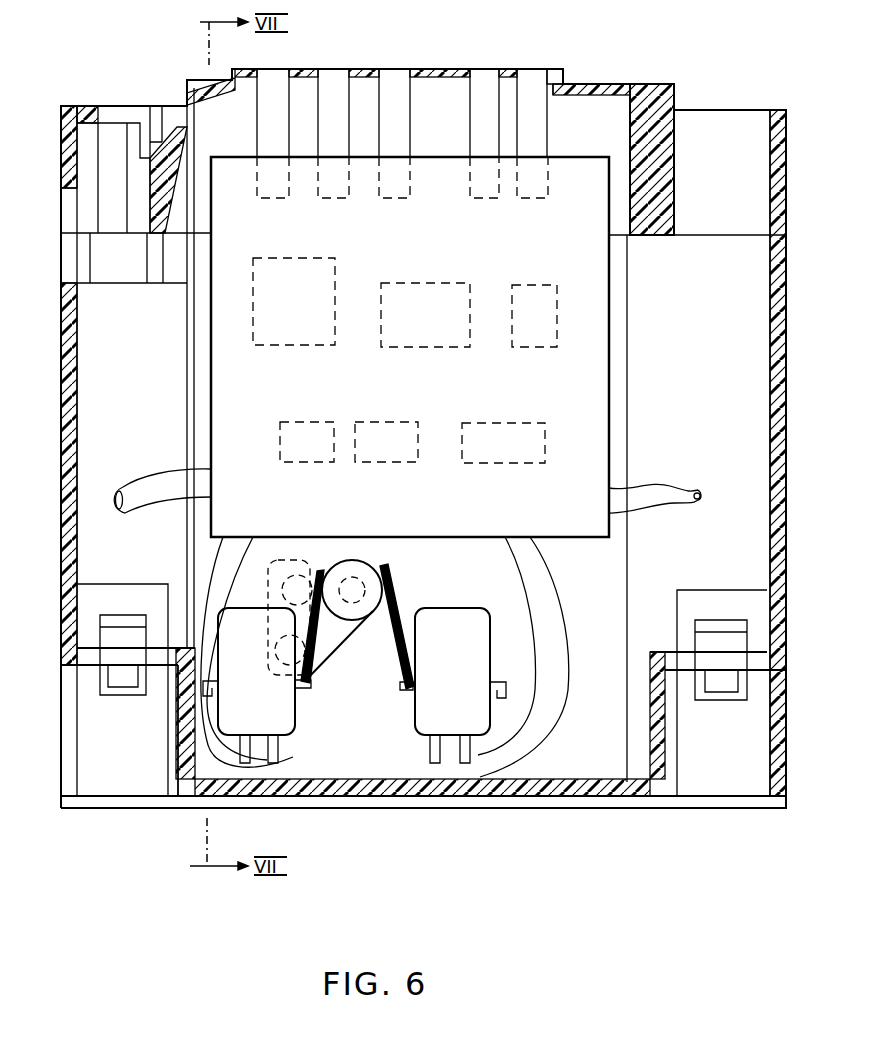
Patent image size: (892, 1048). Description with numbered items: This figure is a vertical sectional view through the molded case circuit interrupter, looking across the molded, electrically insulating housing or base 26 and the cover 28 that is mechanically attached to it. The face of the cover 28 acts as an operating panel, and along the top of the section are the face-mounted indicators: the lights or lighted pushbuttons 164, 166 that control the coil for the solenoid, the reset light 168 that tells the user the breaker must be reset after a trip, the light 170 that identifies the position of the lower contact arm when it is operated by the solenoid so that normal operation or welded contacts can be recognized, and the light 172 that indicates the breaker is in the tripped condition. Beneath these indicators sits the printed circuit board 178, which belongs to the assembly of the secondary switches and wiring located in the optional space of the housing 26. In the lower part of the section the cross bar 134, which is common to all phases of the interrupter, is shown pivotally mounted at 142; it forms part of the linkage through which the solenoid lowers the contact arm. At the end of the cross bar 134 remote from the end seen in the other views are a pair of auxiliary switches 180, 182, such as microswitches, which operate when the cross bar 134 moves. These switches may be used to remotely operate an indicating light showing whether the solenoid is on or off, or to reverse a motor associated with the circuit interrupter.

The housing 26 is at (780, 390).
The cover 28 is at (780, 112).
The cross bar 134 is at (309, 570).
The pivot mounting of cross bar 142 is at (293, 560).
The lighted pushbutton 164 is at (277, 85).
The lighted pushbutton 166 is at (337, 85).
The reset light 168 is at (398, 85).
The light 170 is at (486, 85).
The light 172 is at (533, 85).
The printed circuit board 178 is at (575, 172).
The auxiliary switch 180 is at (270, 691).
The auxiliary switch 182 is at (471, 679).